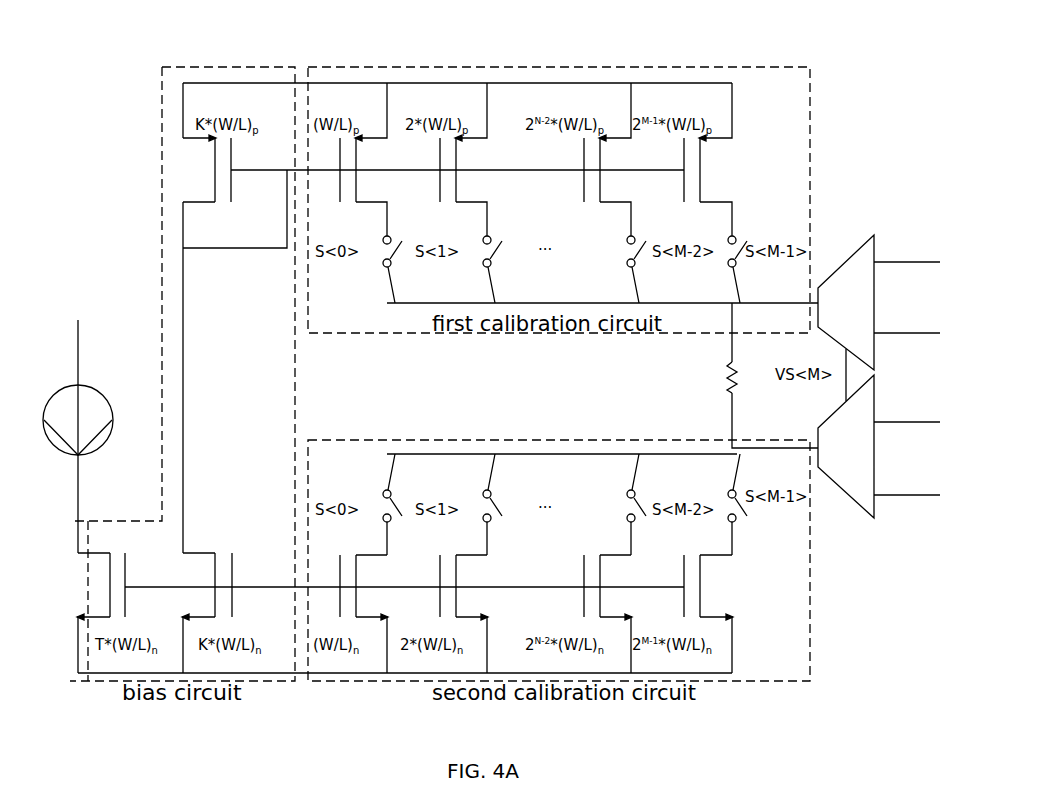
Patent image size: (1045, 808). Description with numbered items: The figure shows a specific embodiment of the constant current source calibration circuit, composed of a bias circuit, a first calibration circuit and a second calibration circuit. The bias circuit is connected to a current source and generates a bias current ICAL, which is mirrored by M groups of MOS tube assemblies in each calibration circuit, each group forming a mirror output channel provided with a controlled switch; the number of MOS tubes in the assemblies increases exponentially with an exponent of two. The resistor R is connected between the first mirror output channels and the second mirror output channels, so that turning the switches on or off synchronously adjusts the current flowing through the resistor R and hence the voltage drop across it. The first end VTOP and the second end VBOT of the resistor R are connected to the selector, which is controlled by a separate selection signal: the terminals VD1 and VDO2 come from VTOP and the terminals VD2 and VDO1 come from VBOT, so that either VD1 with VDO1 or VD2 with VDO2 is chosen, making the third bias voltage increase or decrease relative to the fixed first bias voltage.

The bias current ICAL is at (86, 436).
The resistor R is at (720, 377).
The first end of the resistor VTOP is at (602, 332).
The second end of the resistor VBOT is at (602, 423).
The first bias voltage terminal VD1 is at (907, 250).
The third bias voltage terminal VDO2 is at (907, 319).
The first bias voltage terminal VD2 is at (907, 410).
The third bias voltage terminal VDO1 is at (907, 483).